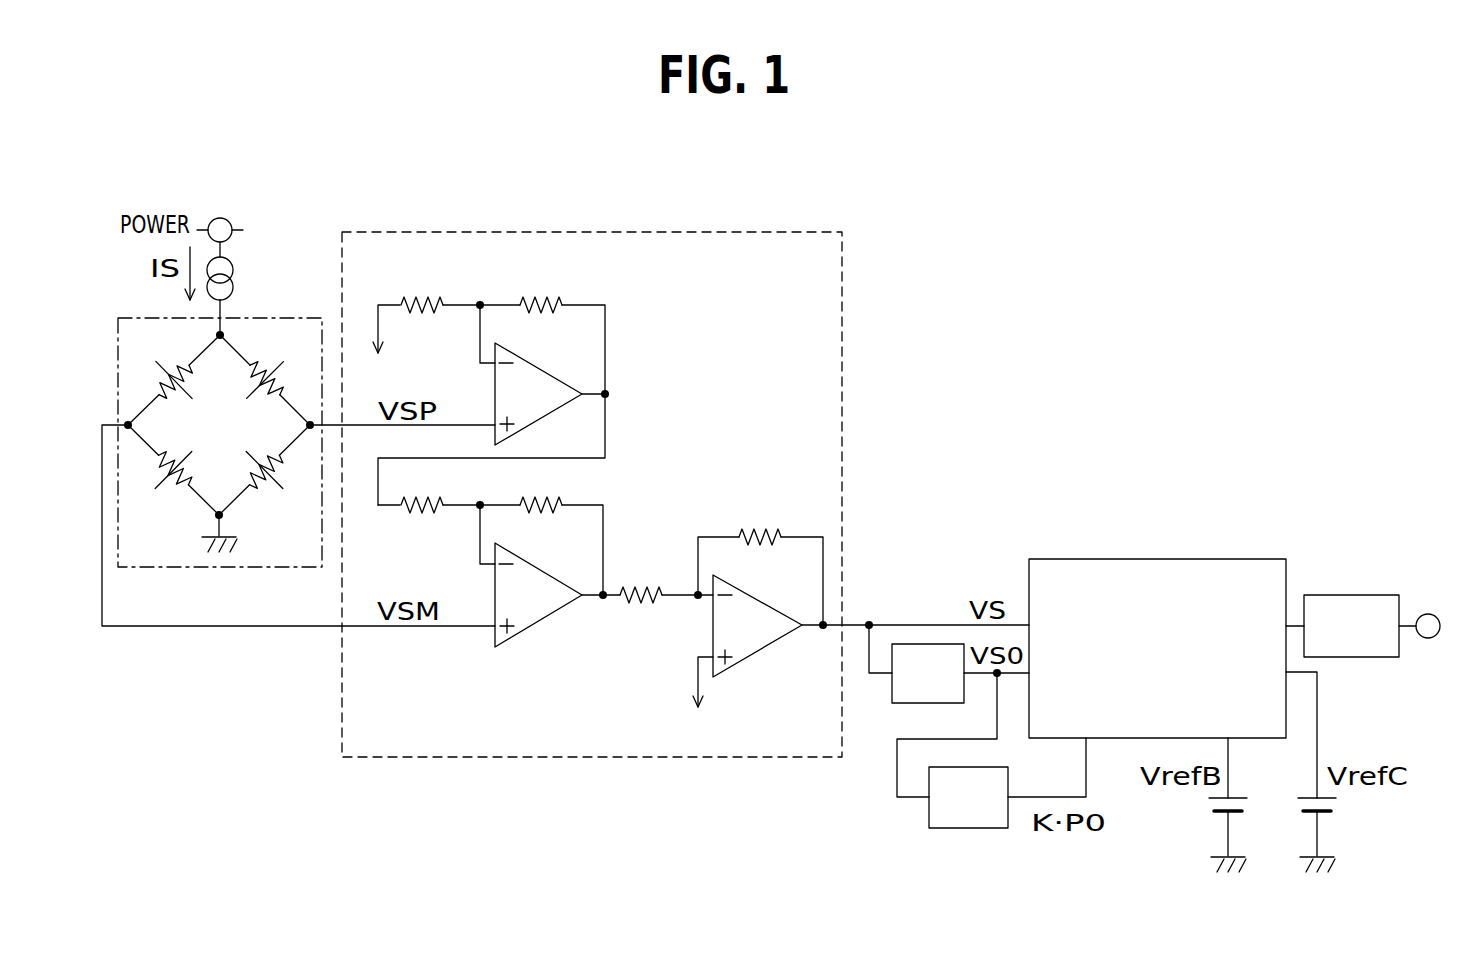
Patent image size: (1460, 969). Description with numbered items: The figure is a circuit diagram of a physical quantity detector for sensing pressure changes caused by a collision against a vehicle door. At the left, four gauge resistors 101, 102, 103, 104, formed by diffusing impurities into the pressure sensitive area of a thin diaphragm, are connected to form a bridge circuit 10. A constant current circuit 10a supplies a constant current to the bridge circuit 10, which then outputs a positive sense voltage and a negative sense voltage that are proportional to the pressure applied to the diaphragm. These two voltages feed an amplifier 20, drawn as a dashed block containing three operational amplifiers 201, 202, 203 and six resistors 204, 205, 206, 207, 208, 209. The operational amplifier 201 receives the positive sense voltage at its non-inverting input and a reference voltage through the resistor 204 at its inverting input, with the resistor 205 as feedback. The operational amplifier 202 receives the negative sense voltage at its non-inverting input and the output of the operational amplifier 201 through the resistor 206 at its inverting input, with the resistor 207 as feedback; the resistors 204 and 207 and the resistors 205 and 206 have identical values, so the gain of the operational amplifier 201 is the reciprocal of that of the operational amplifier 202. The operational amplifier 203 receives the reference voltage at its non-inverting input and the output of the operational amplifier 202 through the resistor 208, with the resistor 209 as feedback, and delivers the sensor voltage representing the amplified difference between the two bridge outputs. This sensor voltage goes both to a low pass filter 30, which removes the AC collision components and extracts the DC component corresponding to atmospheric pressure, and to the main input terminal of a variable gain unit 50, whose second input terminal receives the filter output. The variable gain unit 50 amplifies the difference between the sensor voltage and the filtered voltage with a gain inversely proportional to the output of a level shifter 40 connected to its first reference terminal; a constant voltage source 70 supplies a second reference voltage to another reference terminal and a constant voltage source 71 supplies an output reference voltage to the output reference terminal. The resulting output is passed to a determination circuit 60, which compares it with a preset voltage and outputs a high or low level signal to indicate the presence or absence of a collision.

The bridge circuit 10 is at (304, 316).
The constant current circuit 10a is at (232, 263).
The gauge resistor 101 is at (162, 380).
The gauge resistor 102 is at (292, 359).
The gauge resistor 103 is at (162, 478).
The gauge resistor 104 is at (280, 480).
The amplifier 20 is at (489, 231).
The operational amplifier 201 is at (517, 348).
The operational amplifier 202 is at (517, 550).
The operational amplifier 203 is at (733, 580).
The resistor 204 is at (437, 310).
The resistor 205 is at (557, 297).
The resistor 206 is at (437, 510).
The resistor 207 is at (555, 497).
The resistor 208 is at (653, 606).
The resistor 209 is at (783, 535).
The low pass filter 30 is at (888, 690).
The level shifter 40 is at (961, 829).
The variable gain unit 50 is at (1225, 559).
The determination circuit 60 is at (1357, 595).
The constant voltage source 70 is at (1240, 797).
The constant voltage source 71 is at (1333, 800).